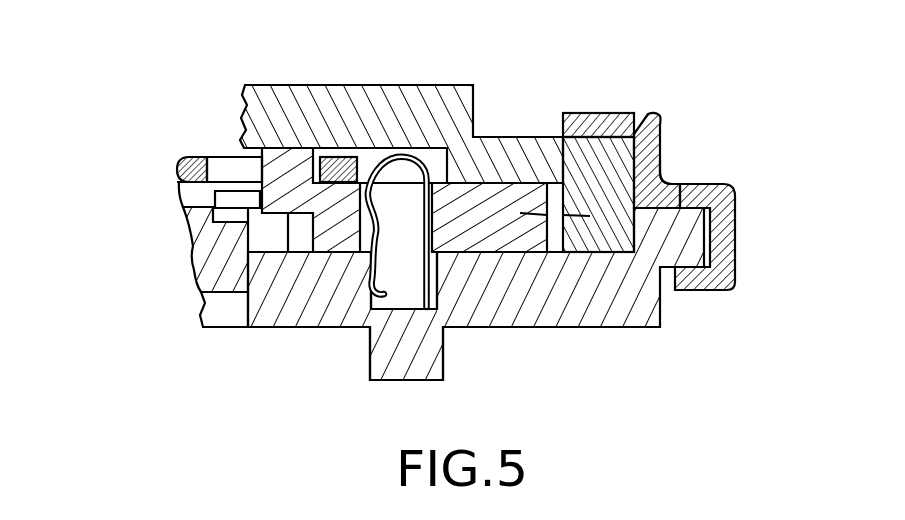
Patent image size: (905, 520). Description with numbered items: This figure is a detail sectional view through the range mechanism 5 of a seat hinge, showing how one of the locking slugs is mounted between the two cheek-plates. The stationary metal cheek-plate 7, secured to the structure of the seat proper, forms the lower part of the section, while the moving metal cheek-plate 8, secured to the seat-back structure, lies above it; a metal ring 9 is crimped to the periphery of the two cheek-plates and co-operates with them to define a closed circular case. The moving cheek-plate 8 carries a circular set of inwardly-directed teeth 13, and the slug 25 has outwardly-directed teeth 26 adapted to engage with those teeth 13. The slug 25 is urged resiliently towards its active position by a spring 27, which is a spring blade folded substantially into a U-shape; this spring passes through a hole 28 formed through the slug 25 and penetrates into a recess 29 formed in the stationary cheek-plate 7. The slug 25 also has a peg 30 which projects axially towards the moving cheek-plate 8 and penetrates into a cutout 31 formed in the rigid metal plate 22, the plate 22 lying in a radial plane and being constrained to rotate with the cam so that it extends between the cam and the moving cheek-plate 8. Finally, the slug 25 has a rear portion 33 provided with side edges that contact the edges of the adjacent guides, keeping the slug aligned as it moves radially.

The range mechanism 5 is at (613, 57).
The cheek-plate 7 is at (583, 298).
The cheek-plate 8 is at (597, 177).
The ring 9 is at (730, 234).
The inwardly-directed teeth 13 is at (661, 170).
The plate 22 is at (178, 158).
The slug 25 is at (495, 206).
The outwardly-directed teeth 26 is at (520, 214).
The spring 27 is at (373, 337).
The hole 28 is at (270, 328).
The recess 29 is at (370, 297).
The peg 30 is at (287, 167).
The cutout 31 is at (227, 165).
The rear portion 33 is at (208, 240).